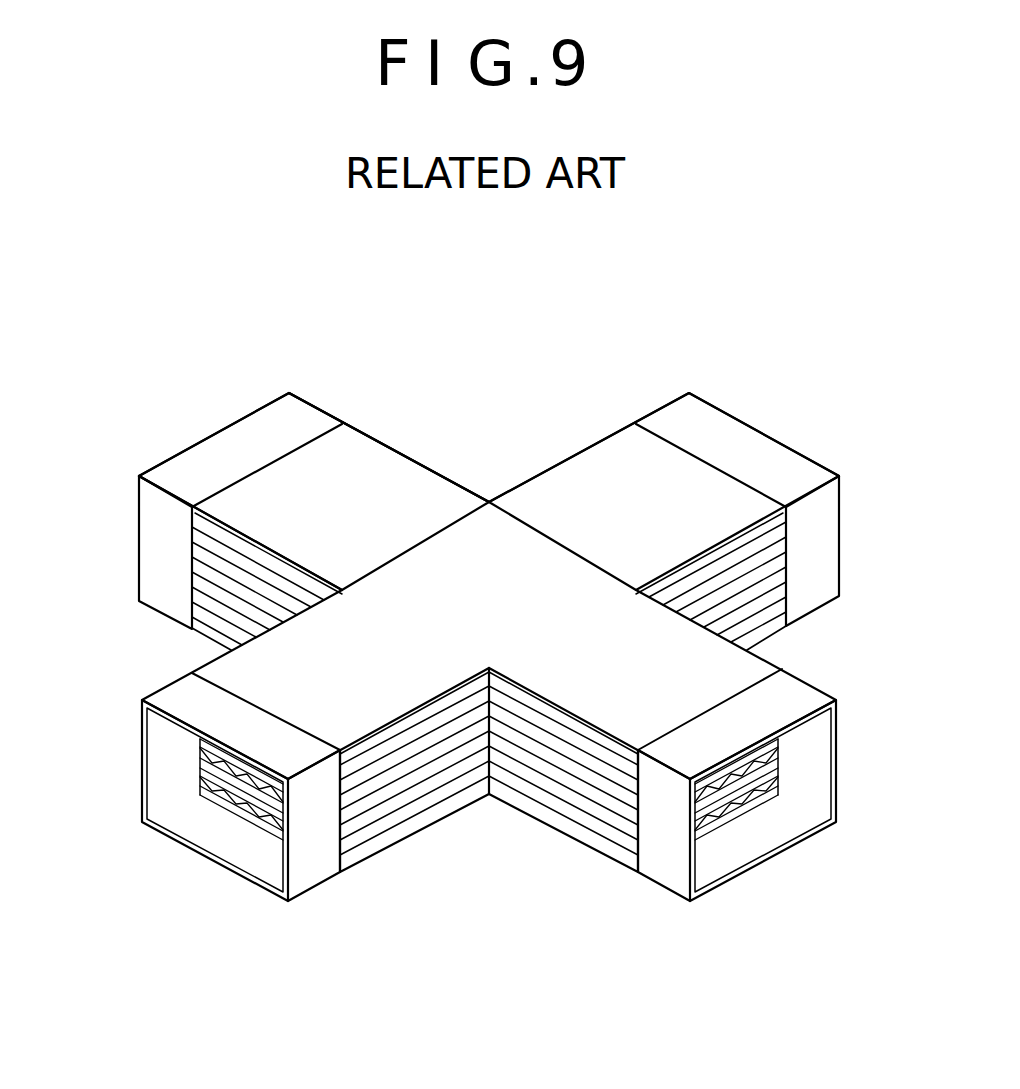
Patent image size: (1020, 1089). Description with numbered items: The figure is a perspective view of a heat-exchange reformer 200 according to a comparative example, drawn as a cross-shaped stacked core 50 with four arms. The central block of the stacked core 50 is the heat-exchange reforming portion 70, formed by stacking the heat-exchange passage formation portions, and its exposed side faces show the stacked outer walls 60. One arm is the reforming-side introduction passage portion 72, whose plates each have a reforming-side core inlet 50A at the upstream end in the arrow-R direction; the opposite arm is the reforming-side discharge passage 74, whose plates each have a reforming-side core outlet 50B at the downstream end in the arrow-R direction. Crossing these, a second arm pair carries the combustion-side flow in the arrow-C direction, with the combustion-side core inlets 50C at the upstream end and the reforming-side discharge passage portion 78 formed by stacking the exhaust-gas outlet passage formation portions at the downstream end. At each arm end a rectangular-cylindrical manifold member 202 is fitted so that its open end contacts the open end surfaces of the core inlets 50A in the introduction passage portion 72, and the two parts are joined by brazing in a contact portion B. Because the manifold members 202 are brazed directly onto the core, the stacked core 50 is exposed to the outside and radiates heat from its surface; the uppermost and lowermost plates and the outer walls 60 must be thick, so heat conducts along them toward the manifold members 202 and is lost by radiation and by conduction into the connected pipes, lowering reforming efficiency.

The heat-exchange reformer 200 is at (618, 357).
The stacked core 50 is at (458, 476).
The reforming-side core inlet 50A is at (278, 462).
The reforming-side core outlet 50B is at (727, 803).
The combustion-side core inlet 50C is at (203, 763).
The outer wall 60 is at (244, 606).
The heat-exchange reforming portion 70 is at (408, 693).
The reforming-side introduction passage portion 72 is at (403, 480).
The reforming-side discharge passage 74 is at (595, 705).
The reforming-side discharge passage portion 78 is at (577, 468).
The manifold member 202 is at (300, 416).
The contact portion B is at (318, 445).
The arrow-R direction R is at (130, 350).
The arrow-C direction C is at (83, 928).